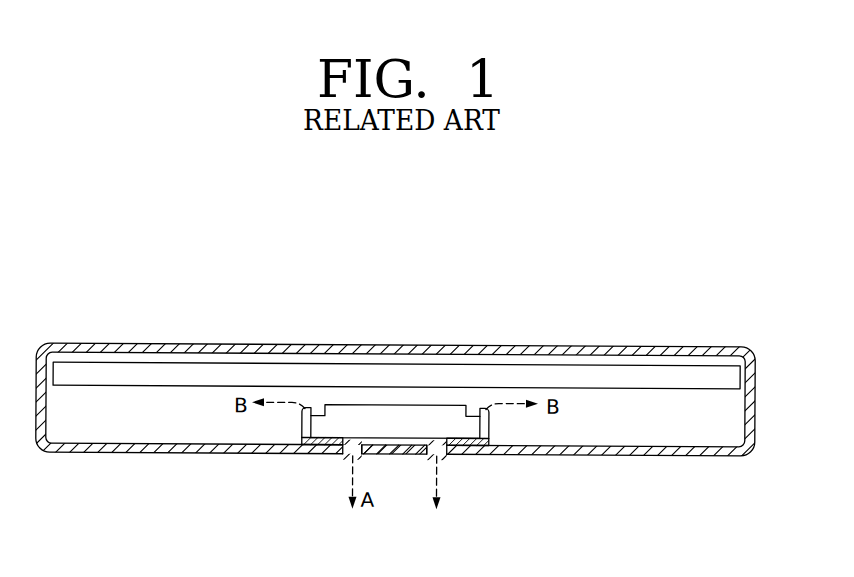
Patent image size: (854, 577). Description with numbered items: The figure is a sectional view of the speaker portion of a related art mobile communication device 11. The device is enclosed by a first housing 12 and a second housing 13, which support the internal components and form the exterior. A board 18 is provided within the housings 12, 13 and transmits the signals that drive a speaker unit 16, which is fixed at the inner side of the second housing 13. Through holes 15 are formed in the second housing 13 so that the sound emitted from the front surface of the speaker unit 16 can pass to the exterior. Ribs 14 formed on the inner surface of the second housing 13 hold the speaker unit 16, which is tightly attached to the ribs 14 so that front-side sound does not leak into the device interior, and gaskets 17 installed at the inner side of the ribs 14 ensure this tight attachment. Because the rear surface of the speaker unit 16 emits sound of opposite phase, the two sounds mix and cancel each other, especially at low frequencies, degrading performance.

The mobile communication device 11 is at (687, 322).
The first housing 12 is at (755, 377).
The second housing 13 is at (755, 420).
The ribs 14 is at (487, 421).
The through holes 15 is at (358, 456).
The speaker unit 16 is at (338, 428).
The gaskets 17 is at (473, 438).
The board 18 is at (85, 370).